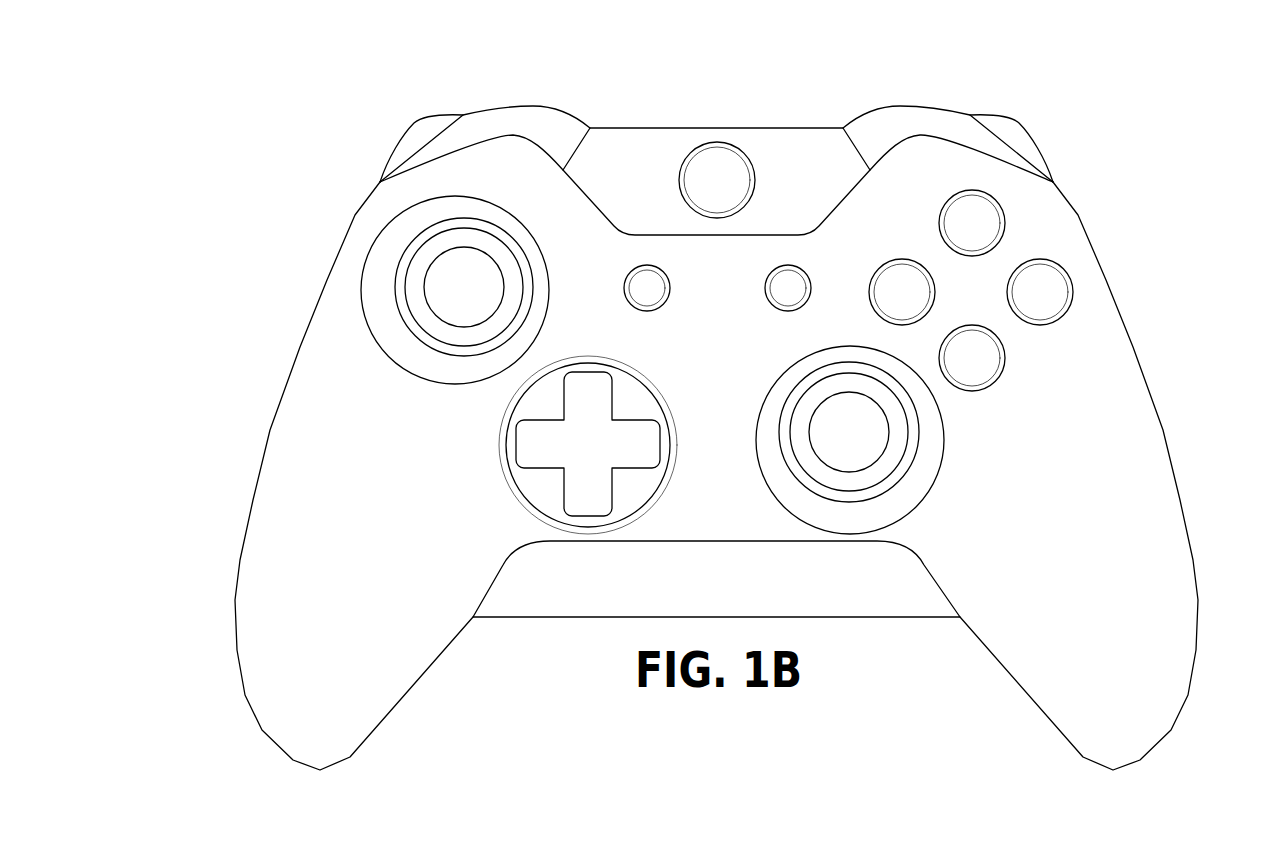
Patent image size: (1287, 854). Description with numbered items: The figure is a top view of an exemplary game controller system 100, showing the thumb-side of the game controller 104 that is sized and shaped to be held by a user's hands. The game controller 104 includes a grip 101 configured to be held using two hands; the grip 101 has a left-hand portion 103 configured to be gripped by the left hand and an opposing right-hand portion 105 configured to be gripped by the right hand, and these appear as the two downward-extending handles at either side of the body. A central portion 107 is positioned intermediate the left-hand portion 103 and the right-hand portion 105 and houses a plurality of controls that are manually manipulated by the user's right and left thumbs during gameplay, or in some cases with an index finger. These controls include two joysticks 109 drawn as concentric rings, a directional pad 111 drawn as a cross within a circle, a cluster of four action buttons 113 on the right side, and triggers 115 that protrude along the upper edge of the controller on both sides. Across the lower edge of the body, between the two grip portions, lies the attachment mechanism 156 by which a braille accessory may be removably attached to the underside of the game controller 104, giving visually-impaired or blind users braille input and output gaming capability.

The game controller system 100 is at (346, 105).
The grip 101 is at (760, 263).
The left-hand portion 103 is at (277, 635).
The game controller 104 is at (1124, 292).
The right-hand portion 105 is at (1158, 633).
The central portion 107 is at (736, 507).
The joysticks 109 is at (523, 288).
The directional pad 111 is at (530, 470).
The action buttons 113 is at (902, 258).
The triggers 115 is at (435, 113).
The attachment mechanism 156 is at (857, 622).